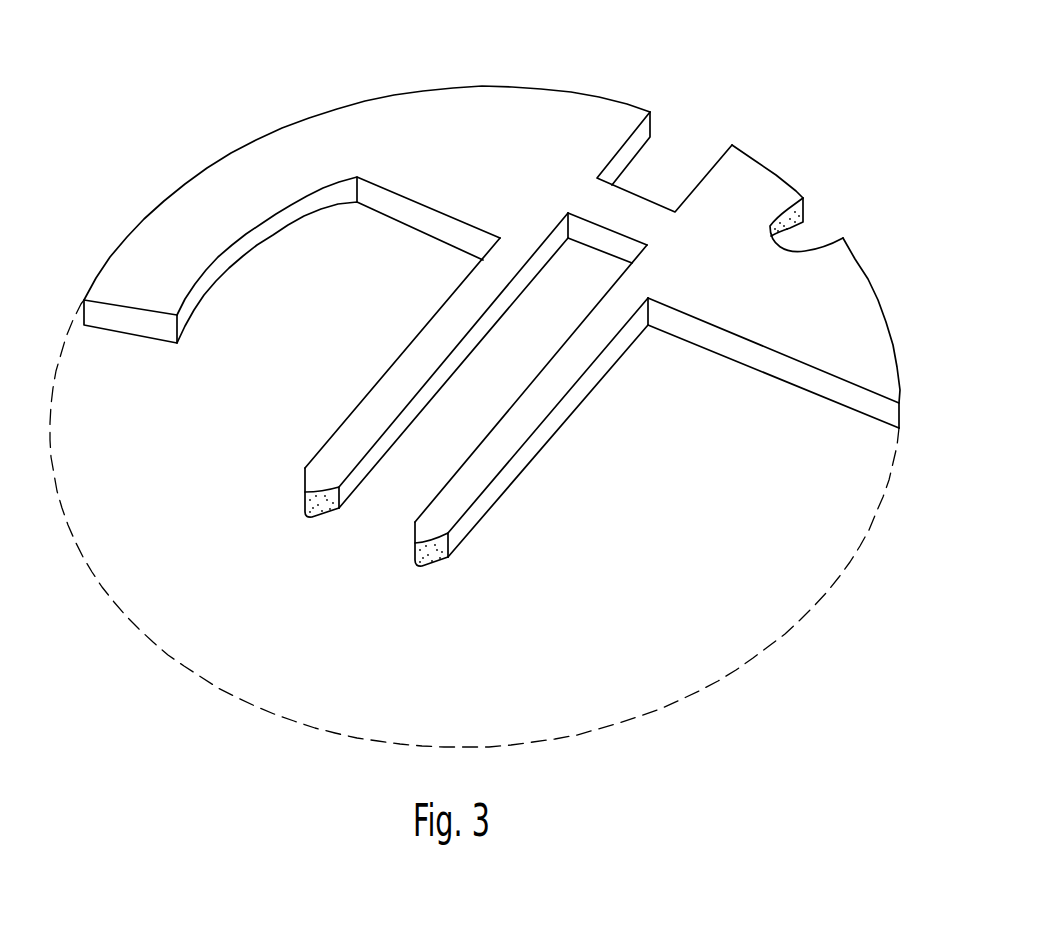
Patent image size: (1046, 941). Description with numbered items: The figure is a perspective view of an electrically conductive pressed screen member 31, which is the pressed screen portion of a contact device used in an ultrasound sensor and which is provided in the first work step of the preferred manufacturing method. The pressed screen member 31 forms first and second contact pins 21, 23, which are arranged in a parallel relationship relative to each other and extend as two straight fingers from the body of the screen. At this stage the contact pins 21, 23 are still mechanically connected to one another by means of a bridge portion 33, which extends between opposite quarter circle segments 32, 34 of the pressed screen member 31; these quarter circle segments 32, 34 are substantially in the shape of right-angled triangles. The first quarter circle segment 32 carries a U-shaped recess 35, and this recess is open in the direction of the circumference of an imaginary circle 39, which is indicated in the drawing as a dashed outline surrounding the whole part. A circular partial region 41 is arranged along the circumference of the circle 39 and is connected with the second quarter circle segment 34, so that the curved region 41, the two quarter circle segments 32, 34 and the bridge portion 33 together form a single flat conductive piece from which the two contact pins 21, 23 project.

The pressed screen member 31 is at (289, 84).
The first quarter circle segment 32 is at (857, 303).
The bridge portion 33 is at (630, 207).
The second quarter circle segment 34 is at (448, 108).
The U-shaped recess 35 is at (813, 235).
The imaginary circle 39 is at (663, 710).
The circular partial region 41 is at (153, 241).
The first contact pin 21 is at (355, 432).
The second contact pin 23 is at (482, 485).